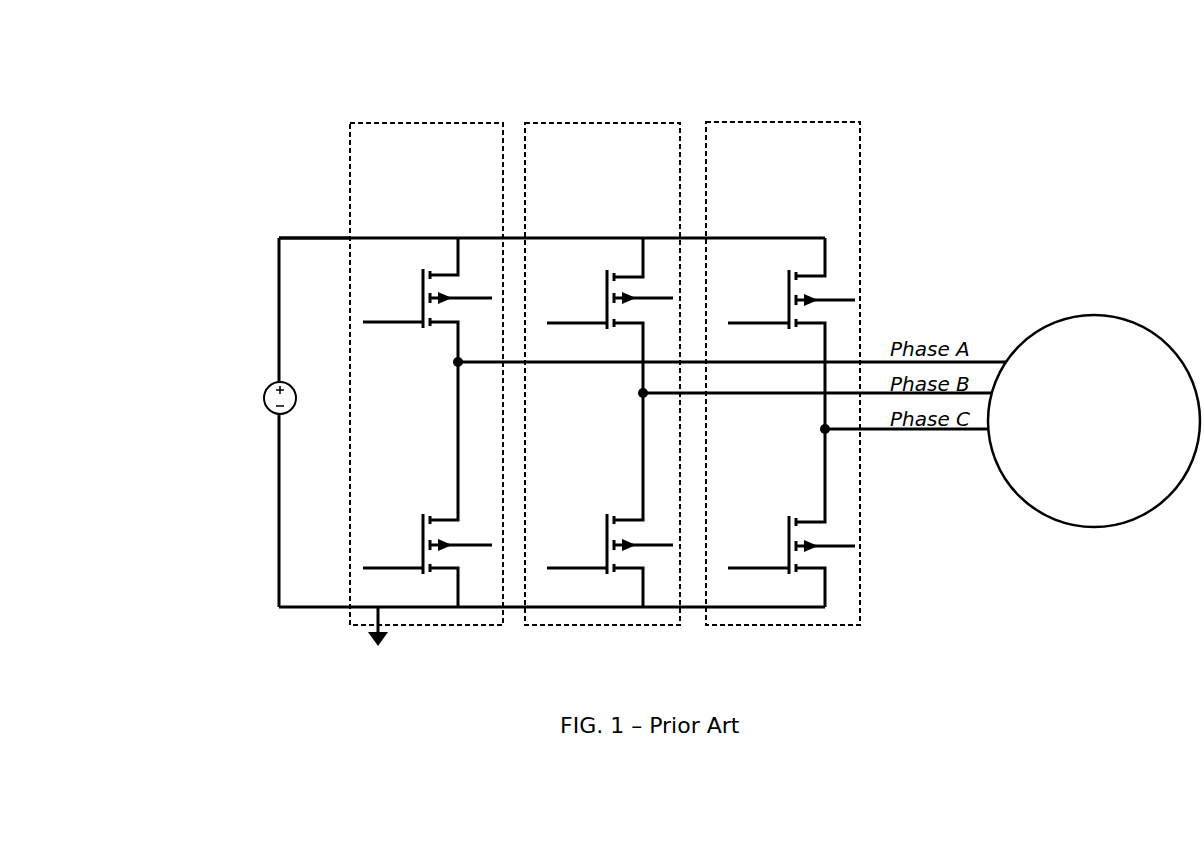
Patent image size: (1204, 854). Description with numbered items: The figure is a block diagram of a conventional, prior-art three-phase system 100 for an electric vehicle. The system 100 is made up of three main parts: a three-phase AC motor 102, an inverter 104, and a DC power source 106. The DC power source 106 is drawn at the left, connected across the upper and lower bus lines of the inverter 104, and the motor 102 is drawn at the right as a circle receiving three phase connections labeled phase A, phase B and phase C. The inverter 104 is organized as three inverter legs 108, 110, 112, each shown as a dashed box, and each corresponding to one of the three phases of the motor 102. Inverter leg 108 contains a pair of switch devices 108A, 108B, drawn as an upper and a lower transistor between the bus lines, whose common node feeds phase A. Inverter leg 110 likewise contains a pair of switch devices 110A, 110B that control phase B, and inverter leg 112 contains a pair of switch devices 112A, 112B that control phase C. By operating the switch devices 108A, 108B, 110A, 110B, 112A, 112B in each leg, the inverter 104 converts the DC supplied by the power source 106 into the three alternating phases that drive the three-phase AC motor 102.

The three-phase system 100 is at (252, 113).
The three-phase AC motor 102 is at (1093, 315).
The inverter 104 is at (318, 237).
The DC power source 106 is at (263, 396).
The inverter leg 108 is at (413, 122).
The switch device 108A is at (416, 268).
The switch device 108B is at (416, 512).
The inverter leg 110 is at (598, 122).
The switch device 110A is at (600, 268).
The switch device 110B is at (600, 512).
The inverter leg 112 is at (780, 121).
The switch device 112A is at (782, 270).
The switch device 112B is at (773, 526).